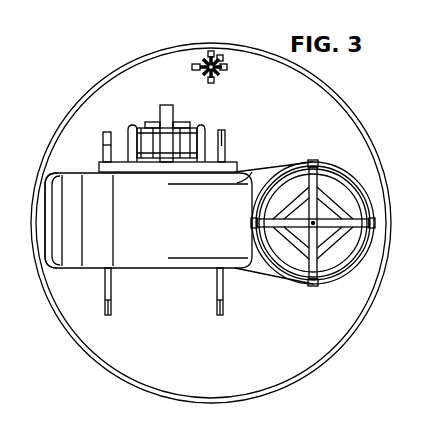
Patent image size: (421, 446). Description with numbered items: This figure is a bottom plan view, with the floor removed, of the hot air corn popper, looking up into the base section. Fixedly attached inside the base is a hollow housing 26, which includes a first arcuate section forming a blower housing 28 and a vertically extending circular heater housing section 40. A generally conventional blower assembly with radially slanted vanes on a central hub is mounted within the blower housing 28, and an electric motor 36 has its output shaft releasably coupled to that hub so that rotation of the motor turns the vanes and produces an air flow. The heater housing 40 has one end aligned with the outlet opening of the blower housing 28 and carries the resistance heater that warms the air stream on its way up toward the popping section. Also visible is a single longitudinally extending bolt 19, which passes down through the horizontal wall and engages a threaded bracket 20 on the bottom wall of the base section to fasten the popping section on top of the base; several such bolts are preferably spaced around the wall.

The bolt 19 is at (222, 72).
The threaded bracket 20 is at (192, 69).
The hollow housing 26 is at (190, 282).
The blower housing 28 is at (77, 190).
The electric motor 36 is at (193, 128).
The heater housing section 40 is at (313, 161).